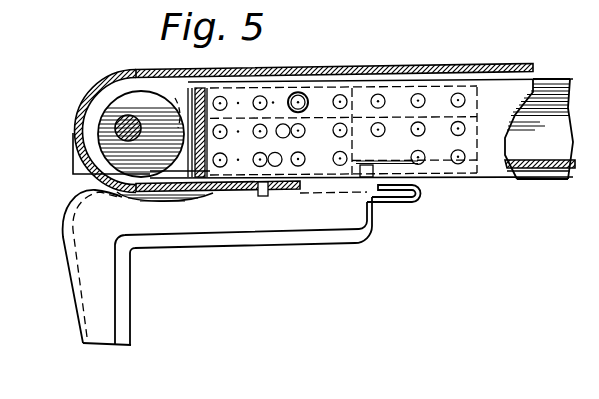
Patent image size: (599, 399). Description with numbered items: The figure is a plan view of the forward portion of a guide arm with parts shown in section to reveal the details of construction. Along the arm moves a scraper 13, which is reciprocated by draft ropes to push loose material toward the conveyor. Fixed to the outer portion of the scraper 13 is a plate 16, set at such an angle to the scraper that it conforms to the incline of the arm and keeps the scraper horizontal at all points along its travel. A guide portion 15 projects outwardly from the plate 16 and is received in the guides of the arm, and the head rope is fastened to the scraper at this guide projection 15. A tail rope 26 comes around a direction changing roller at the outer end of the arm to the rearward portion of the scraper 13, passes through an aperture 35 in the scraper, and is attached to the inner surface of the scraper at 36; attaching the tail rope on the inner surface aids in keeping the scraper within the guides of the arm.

The tail rope 26 is at (304, 119).
The attachment point on inner surface of scraper 36 is at (143, 186).
The aperture 35 is at (76, 267).
The scraper 13 is at (243, 271).
The plate 16 is at (394, 210).
The guide portion 15 is at (404, 188).